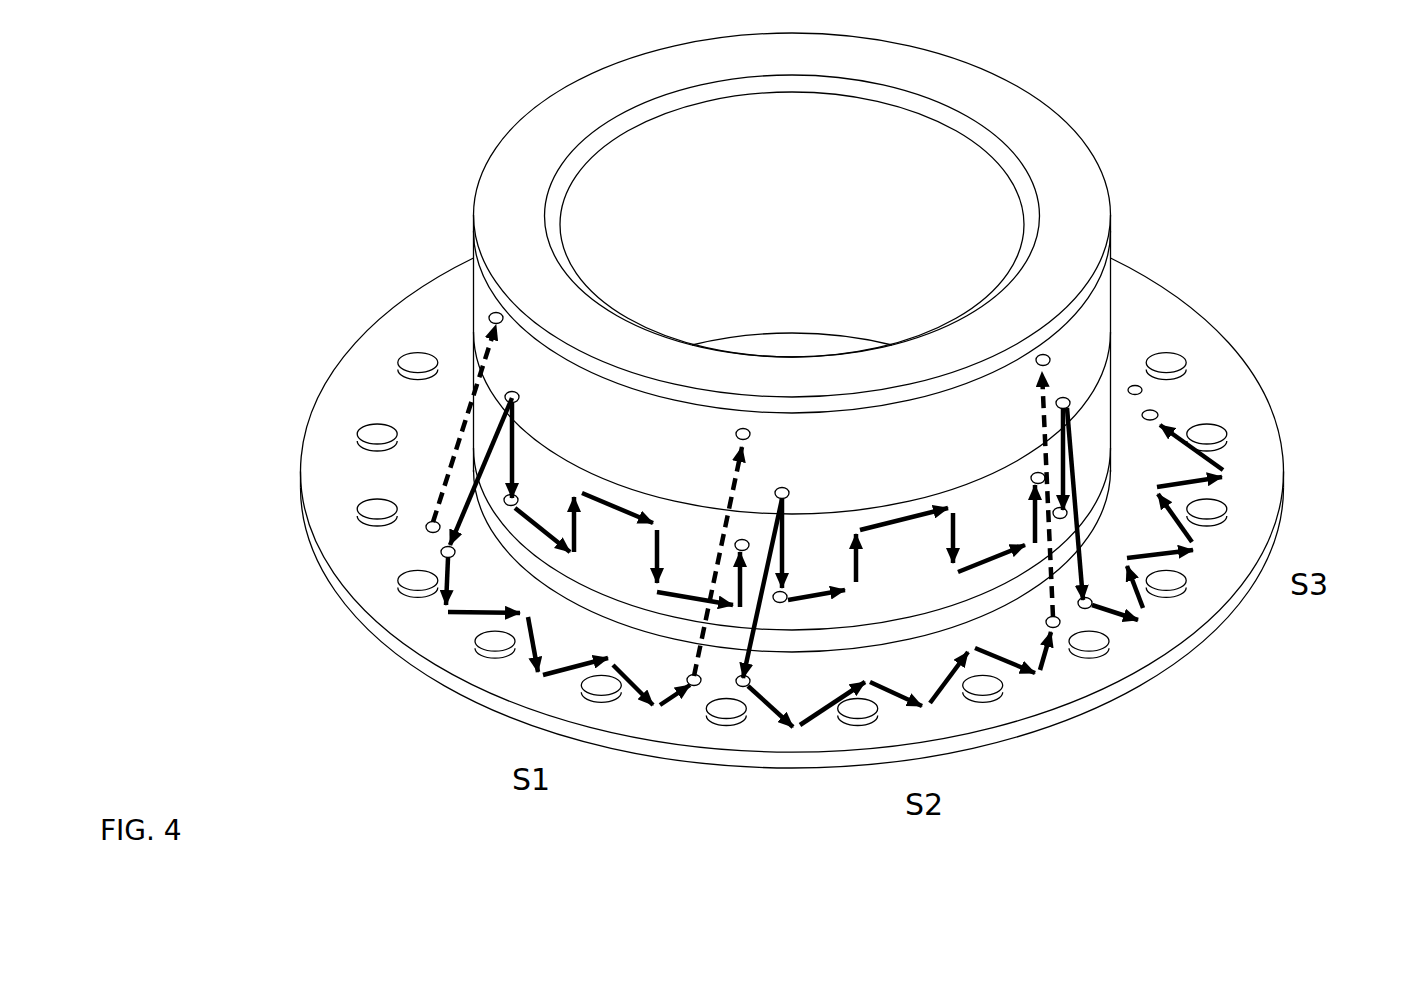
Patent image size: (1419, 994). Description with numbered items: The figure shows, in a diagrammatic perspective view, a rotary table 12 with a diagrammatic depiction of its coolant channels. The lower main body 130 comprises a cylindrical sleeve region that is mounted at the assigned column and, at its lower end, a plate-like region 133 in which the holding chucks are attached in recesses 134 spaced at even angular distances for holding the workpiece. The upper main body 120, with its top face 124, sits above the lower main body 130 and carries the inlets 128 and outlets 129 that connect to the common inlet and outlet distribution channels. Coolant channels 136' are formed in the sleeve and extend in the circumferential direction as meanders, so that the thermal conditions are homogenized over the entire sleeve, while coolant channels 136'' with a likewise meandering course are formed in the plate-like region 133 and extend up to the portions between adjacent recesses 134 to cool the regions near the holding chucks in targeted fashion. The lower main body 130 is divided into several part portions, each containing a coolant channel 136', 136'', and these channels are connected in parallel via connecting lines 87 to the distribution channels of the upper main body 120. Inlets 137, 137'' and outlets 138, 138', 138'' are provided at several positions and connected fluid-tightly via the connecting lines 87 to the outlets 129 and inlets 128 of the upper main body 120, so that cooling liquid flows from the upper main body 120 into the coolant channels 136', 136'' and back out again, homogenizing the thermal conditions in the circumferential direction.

The flange assembly 12 is at (128, 66).
The upper main body 120 is at (485, 298).
The lower main body 130 is at (483, 407).
The top surface / bore 124 is at (1050, 163).
The inlets of the upper main body 128 is at (1045, 365).
The plate-like region 133 is at (1233, 390).
The recesses 134 is at (1217, 517).
The outlets of the upper main body 129 is at (790, 495).
The connecting lines 87 is at (495, 437).
The weld point 137 is at (779, 560).
The coolant channels in the sleeve 136' is at (624, 516).
The coolant channels in the plate-like region 136'' is at (555, 670).
The weld point 138 is at (447, 587).
The outlets 138' is at (1214, 509).
The weld point 138'' is at (926, 715).
The weld point 137'' is at (690, 624).